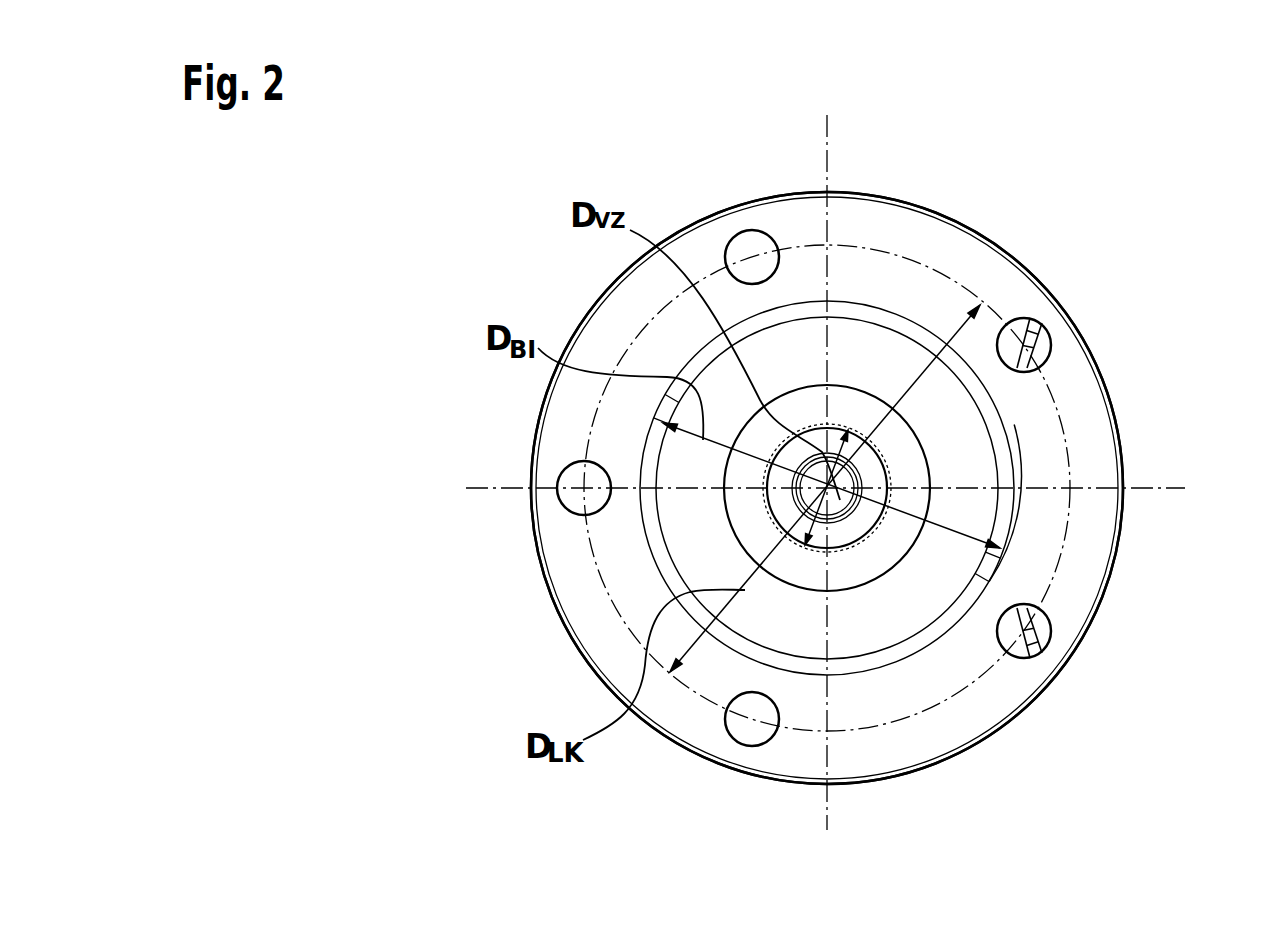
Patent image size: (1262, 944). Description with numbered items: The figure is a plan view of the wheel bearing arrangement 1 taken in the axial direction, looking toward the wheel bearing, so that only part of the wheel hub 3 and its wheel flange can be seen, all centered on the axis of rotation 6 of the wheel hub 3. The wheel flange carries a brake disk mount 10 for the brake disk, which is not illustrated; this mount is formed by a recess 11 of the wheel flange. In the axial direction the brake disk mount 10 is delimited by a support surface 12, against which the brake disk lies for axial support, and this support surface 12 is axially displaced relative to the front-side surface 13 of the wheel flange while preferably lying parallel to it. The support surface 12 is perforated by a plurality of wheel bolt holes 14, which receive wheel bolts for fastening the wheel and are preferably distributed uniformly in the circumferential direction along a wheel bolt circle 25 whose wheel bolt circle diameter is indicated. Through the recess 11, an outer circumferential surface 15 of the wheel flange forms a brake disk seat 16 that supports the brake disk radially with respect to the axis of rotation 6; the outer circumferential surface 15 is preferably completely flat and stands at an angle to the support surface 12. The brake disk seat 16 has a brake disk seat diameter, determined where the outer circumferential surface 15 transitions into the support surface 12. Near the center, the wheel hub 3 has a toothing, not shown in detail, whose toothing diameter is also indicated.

The wheel bearing arrangement 1 is at (1153, 177).
The wheel hub 3 is at (1107, 337).
The axis of rotation 6 is at (858, 512).
The brake disk mount 10 is at (1093, 457).
The recess 11 is at (1007, 530).
The support surface 12 is at (1072, 392).
The front-side surface 13 is at (910, 580).
The wheel bolt hole 14 is at (743, 240).
The outer circumferential surface 15 is at (857, 311).
The brake disk seat 16 is at (898, 312).
The wheel bolt circle 25 is at (963, 287).